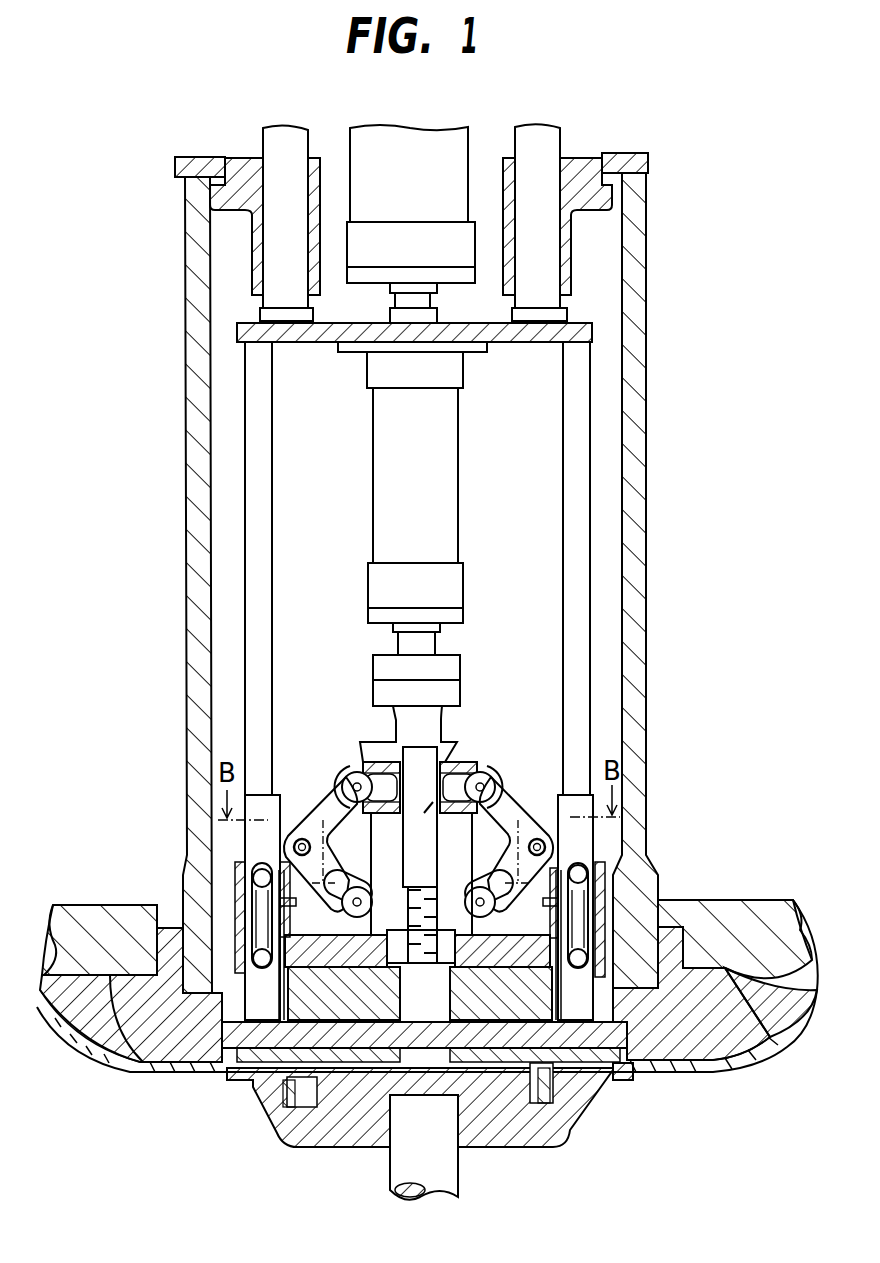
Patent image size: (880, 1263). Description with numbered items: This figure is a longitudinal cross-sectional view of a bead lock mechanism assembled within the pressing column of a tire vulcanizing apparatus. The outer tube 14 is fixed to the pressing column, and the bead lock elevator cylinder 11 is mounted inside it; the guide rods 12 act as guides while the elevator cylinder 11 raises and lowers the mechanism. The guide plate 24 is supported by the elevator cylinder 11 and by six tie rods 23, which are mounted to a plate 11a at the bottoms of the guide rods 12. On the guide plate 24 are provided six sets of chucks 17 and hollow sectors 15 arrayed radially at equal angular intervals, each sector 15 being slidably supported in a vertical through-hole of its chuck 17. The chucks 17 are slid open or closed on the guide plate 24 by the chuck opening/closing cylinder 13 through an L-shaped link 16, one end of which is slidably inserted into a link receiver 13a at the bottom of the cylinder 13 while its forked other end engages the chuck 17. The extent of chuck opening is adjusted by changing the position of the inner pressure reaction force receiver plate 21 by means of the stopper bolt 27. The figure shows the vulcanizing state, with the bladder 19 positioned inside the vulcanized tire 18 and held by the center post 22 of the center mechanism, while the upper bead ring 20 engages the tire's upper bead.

The bead lock elevator cylinder 11 is at (452, 140).
The plate 11a is at (237, 332).
The guide rods 12 is at (293, 127).
The chuck opening/closing cylinder 13 is at (450, 473).
The link receiver 13a is at (363, 762).
The outer tube 14 is at (636, 740).
The sectors 15 is at (600, 822).
The links 16 is at (513, 822).
The chucks 17 is at (603, 880).
The vulcanized tire 18 is at (762, 1045).
The bladder 19 is at (753, 1015).
The upper bead ring 20 is at (655, 1040).
The inner pressure reaction force receiver plate 21 is at (612, 1037).
The center post 22 is at (527, 1133).
The tie rods 23 is at (270, 600).
The guide plates 24 is at (540, 1012).
The stopper bolt 27 is at (446, 758).